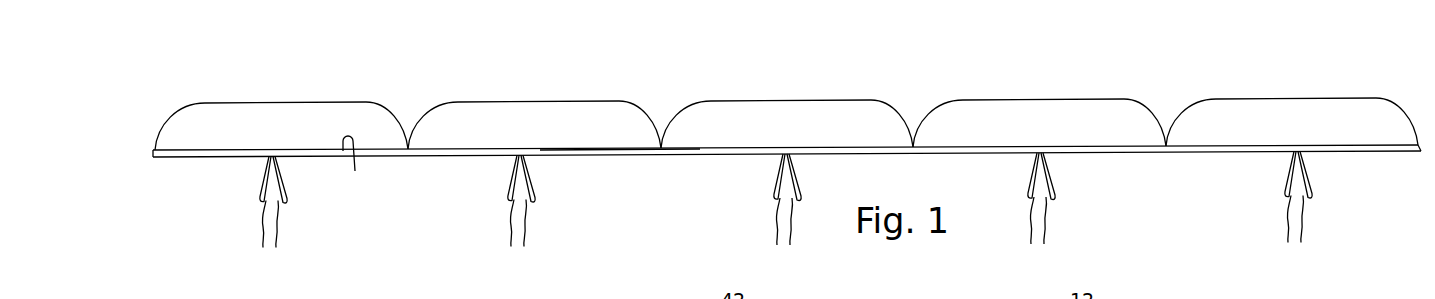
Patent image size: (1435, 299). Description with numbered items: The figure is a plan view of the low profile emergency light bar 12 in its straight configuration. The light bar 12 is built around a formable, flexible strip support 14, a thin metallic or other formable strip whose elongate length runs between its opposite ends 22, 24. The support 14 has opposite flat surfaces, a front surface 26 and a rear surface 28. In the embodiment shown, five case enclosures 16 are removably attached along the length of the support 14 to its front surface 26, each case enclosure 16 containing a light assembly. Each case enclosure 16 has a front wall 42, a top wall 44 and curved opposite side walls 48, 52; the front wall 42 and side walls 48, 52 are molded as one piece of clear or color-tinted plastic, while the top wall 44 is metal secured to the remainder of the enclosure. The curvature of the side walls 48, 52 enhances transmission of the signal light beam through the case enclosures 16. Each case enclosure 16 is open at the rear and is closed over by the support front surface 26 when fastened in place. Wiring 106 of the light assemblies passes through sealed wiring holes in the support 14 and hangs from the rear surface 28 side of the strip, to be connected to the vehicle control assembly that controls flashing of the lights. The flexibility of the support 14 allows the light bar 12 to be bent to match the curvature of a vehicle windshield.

The low profile emergency light bar 12 is at (977, 79).
The strip support 14 is at (1172, 156).
The case enclosure 16 is at (287, 114).
The end of the support 22 is at (153, 155).
The end of the support 24 is at (1421, 151).
The front surface 26 is at (356, 167).
The rear surface 28 is at (619, 156).
The front wall 42 is at (211, 103).
The top wall 44 is at (240, 114).
The side wall 48 is at (173, 118).
The side wall 52 is at (394, 119).
The wiring 106 is at (778, 212).